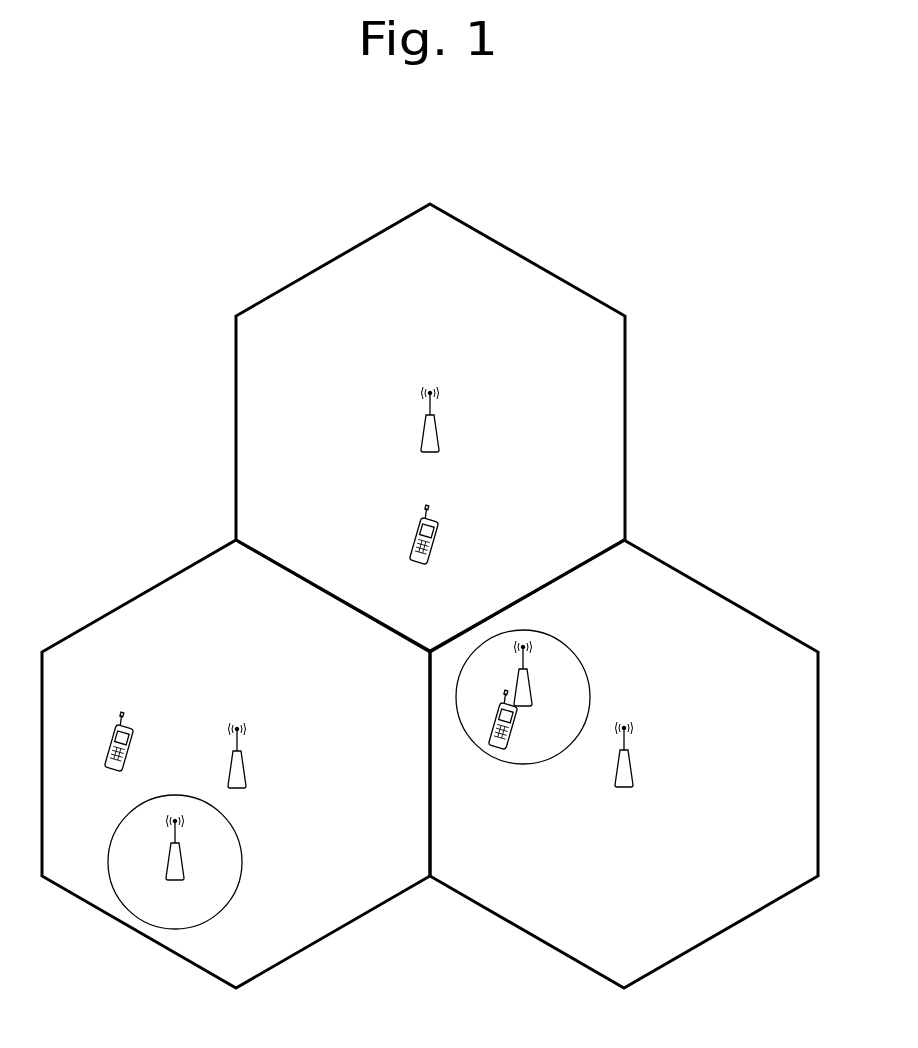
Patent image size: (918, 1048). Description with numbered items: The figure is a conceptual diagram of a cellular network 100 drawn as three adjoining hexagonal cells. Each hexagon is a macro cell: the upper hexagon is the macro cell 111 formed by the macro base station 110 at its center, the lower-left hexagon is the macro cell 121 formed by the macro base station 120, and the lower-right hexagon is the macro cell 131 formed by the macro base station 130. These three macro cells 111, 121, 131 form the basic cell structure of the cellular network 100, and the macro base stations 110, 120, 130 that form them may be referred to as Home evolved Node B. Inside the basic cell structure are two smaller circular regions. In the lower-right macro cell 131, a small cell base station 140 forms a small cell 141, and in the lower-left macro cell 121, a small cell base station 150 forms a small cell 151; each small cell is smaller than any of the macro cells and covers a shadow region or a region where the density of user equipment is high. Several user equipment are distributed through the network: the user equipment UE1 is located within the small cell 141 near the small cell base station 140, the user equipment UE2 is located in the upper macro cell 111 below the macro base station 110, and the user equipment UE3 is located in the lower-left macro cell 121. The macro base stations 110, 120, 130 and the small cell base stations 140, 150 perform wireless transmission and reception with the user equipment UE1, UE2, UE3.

The cellular network 100 is at (738, 177).
The macro base station 110 is at (440, 435).
The macro cell 111 is at (526, 256).
The macro base station 120 is at (245, 770).
The macro cell 121 is at (138, 592).
The macro base station 130 is at (635, 770).
The macro cell 131 is at (720, 592).
The small cell base station 140 is at (533, 680).
The small cell 141 is at (590, 680).
The small cell base station 150 is at (185, 860).
The small cell 151 is at (240, 833).
The user equipment UE1 is at (500, 752).
The user equipment UE2 is at (437, 535).
The user equipment UE3 is at (128, 727).